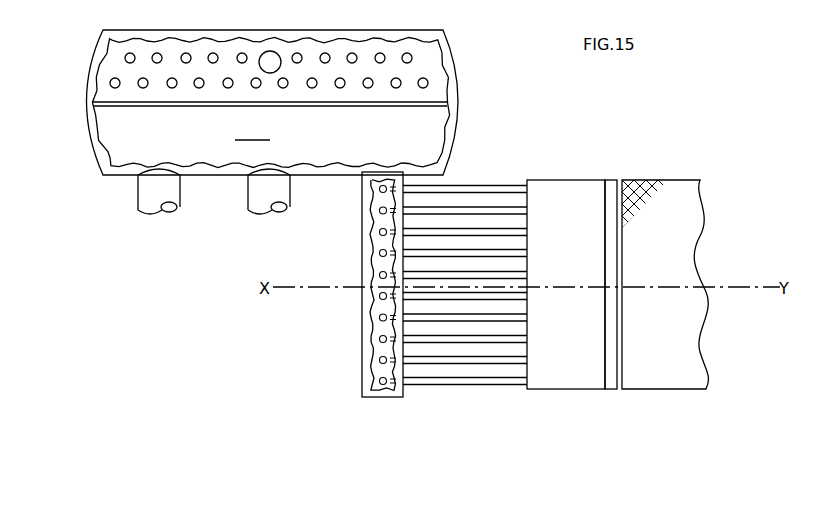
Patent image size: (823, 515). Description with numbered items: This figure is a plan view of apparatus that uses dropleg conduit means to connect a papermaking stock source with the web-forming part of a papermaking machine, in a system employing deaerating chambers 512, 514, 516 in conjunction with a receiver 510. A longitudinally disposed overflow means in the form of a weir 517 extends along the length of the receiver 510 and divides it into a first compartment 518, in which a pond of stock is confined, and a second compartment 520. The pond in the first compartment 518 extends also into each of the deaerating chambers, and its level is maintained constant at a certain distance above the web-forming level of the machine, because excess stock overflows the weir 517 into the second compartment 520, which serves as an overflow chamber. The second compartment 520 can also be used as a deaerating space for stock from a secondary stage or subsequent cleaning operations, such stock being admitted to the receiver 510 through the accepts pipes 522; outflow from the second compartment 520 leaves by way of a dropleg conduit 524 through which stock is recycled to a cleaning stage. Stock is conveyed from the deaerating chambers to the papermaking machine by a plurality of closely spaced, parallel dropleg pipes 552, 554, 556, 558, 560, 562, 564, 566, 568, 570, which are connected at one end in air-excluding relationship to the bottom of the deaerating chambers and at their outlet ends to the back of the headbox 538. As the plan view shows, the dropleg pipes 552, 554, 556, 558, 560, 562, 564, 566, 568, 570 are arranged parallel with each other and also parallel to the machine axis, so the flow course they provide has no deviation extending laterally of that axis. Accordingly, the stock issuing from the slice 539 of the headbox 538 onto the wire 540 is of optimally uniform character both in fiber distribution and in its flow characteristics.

The receiver 510 is at (85, 75).
The deaerating chamber 512 is at (360, 262).
The deaerating chamber 514 is at (248, 212).
The deaerating chamber 516 is at (137, 200).
The weir 517 is at (127, 106).
The first compartment 518 is at (252, 130).
The second compartment 520 is at (437, 84).
The accepts pipes 522 is at (427, 77).
The dropleg conduit 524 is at (272, 49).
The headbox 538 is at (595, 389).
The slice 539 is at (607, 390).
The wire 540 is at (675, 389).
The dropleg pipe 552 is at (425, 386).
The dropleg pipe 554 is at (445, 365).
The dropleg pipe 556 is at (467, 345).
The dropleg pipe 558 is at (474, 322).
The dropleg pipe 560 is at (484, 298).
The dropleg pipe 562 is at (443, 250).
The dropleg pipe 564 is at (485, 227).
The dropleg pipe 566 is at (500, 197).
The dropleg pipe 568 is at (517, 205).
The dropleg pipe 570 is at (415, 272).